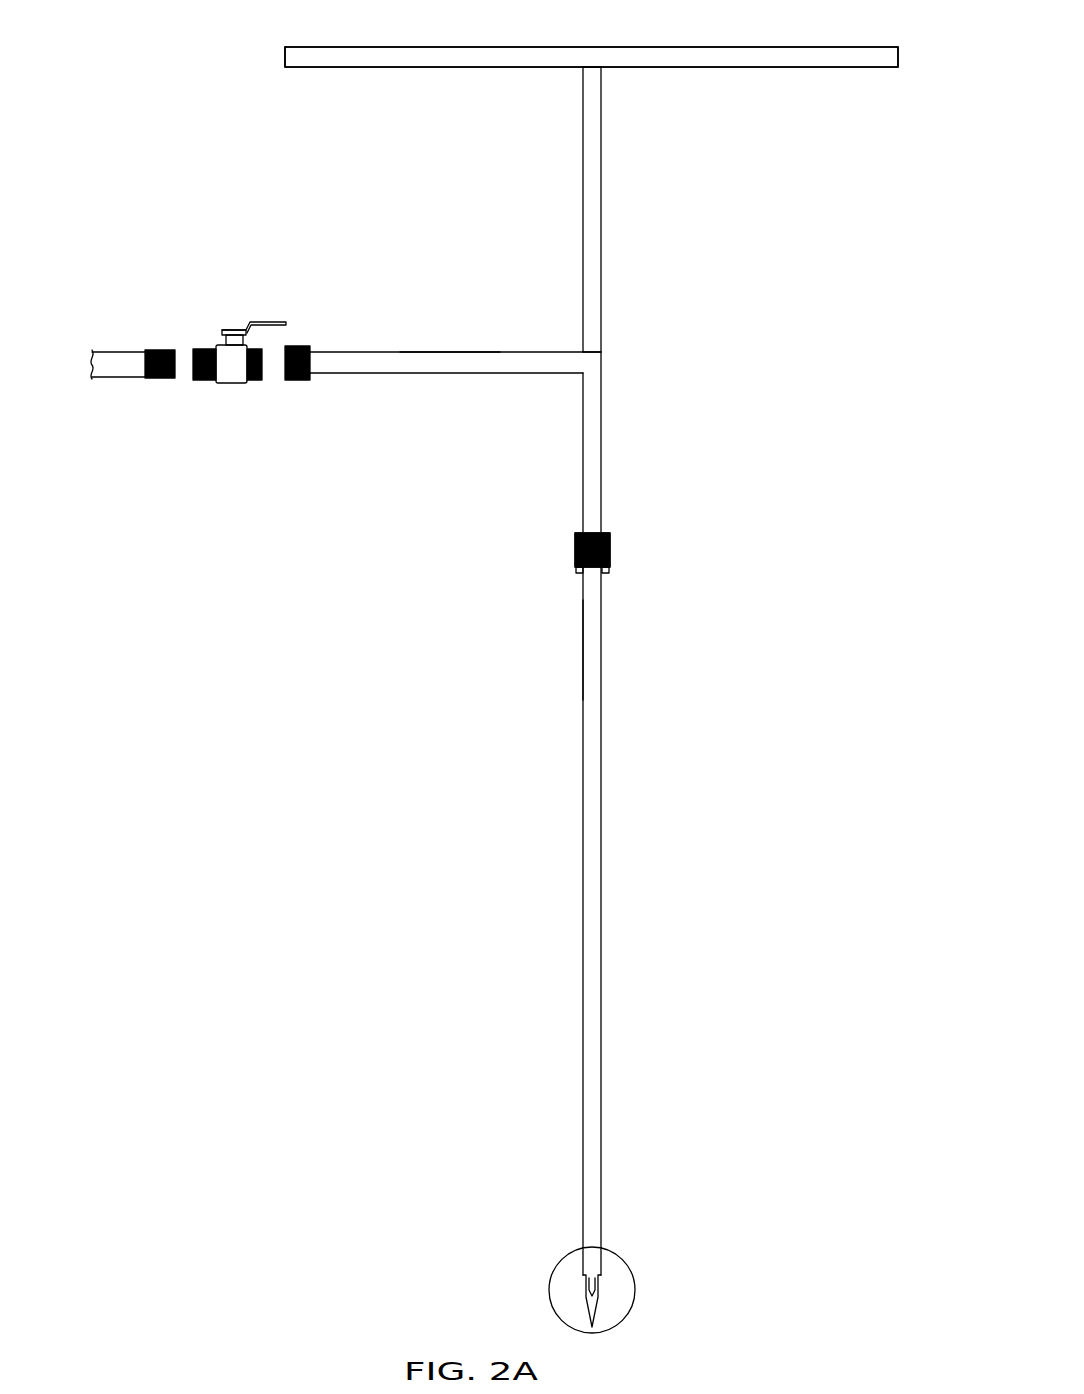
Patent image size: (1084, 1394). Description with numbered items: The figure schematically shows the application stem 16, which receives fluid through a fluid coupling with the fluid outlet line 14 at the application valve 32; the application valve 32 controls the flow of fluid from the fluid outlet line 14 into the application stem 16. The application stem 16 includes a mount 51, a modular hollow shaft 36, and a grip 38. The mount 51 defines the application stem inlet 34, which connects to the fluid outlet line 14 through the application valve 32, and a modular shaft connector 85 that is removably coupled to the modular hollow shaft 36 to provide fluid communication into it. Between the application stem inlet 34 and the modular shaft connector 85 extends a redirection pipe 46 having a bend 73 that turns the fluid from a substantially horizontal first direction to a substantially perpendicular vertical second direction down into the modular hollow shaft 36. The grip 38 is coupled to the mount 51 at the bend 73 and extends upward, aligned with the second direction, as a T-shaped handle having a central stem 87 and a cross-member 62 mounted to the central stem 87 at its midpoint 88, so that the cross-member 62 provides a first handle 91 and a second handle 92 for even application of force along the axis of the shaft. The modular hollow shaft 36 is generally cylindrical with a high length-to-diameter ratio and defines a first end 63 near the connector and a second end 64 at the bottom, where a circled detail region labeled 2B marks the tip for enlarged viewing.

The grip 38 is at (491, 51).
The application stem 16 is at (432, 662).
The cross-member 62 is at (330, 62).
The first handle 91 is at (283, 114).
The second handle 92 is at (891, 111).
The midpoint 88 is at (592, 68).
The central stem 87 is at (602, 214).
The modular hollow shaft 36 is at (672, 824).
The bend 73 is at (600, 361).
The redirection pipe 46 is at (455, 438).
The mount 51 is at (460, 289).
The application stem inlet 34 is at (314, 423).
The application valve 32 is at (231, 328).
The fluid outlet line 14 is at (112, 374).
The first end 63 is at (631, 507).
The modular shaft connector 85 is at (610, 560).
The second end 64 is at (640, 1246).
The detail view circle 2B is at (635, 1290).